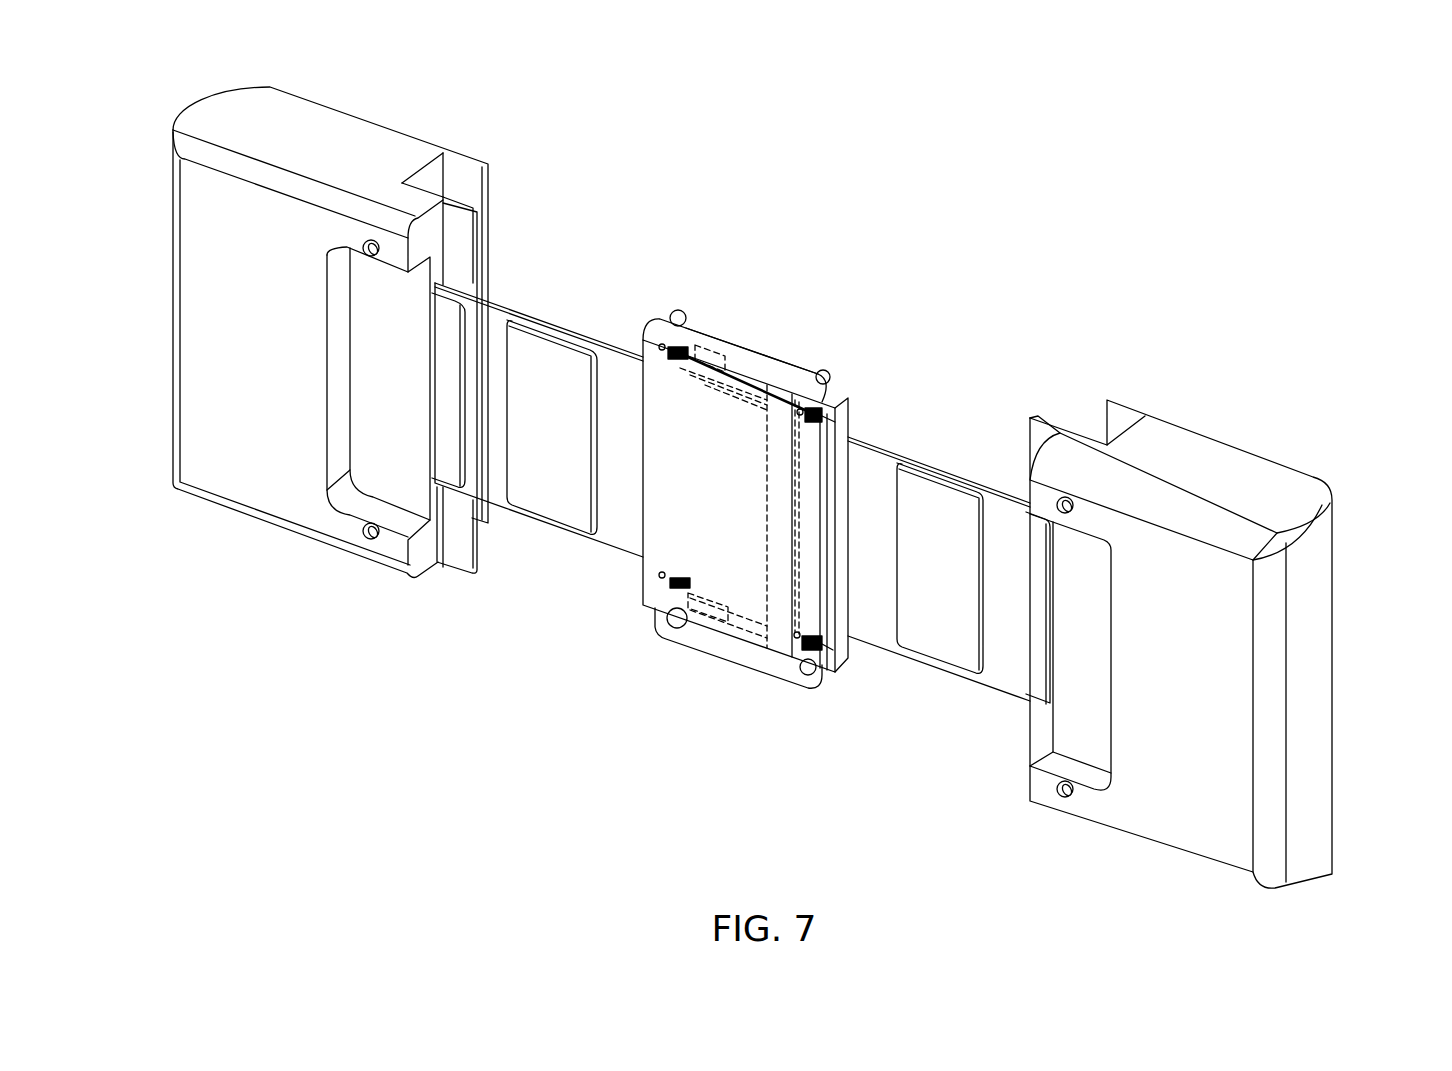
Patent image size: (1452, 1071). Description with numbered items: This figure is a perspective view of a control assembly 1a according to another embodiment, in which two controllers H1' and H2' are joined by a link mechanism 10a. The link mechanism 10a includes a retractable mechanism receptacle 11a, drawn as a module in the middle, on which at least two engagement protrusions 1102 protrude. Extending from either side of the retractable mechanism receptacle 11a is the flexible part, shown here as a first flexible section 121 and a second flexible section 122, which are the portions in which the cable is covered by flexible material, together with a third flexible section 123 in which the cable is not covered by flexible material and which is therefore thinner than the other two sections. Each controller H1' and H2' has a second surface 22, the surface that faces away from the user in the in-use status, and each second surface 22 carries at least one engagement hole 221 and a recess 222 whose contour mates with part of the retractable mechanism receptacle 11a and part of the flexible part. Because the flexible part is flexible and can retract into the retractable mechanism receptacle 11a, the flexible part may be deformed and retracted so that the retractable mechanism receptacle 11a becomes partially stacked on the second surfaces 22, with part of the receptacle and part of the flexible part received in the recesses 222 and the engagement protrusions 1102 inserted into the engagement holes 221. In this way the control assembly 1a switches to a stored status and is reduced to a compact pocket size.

The control assembly 1a is at (590, 68).
The link mechanism 10a is at (876, 336).
The retractable mechanism receptacle 11a is at (767, 332).
The first flexible section 121 is at (939, 468).
The second flexible section 122 is at (573, 326).
The third flexible section 123 is at (812, 541).
The engagement protrusion 1102 is at (680, 310).
The second surface 22 is at (265, 472).
The engagement hole 221 is at (364, 256).
The recess 222 is at (392, 462).
The controller H1' is at (1387, 691).
The controller H2' is at (116, 335).